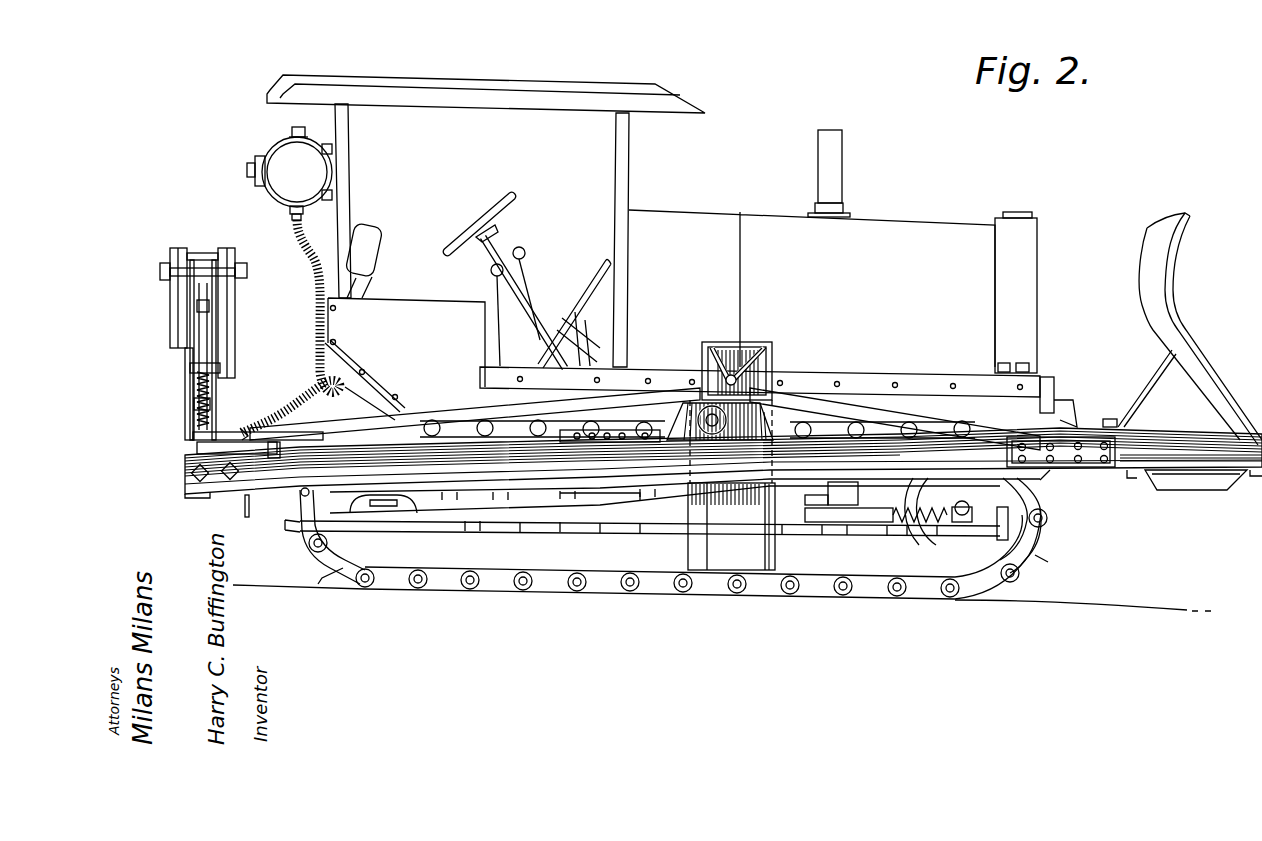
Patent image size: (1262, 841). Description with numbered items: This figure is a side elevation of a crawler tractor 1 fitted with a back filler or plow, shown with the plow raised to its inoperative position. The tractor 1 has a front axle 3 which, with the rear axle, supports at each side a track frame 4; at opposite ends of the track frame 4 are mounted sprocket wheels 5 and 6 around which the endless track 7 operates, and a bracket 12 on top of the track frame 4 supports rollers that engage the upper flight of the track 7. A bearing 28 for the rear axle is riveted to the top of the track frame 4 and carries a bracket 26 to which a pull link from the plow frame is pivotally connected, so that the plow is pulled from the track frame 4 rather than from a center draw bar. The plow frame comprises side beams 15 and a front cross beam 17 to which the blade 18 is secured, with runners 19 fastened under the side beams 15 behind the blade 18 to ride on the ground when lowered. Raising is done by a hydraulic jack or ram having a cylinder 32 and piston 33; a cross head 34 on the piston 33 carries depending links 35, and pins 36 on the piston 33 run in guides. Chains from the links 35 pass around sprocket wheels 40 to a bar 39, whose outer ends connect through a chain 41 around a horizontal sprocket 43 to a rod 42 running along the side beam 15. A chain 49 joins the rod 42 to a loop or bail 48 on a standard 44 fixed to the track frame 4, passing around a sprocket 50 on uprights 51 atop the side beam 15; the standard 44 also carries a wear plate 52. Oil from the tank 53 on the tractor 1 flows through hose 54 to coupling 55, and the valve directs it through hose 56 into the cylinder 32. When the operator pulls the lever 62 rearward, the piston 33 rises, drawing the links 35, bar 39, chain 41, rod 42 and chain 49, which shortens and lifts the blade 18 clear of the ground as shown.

The tractor 1 is at (1023, 383).
The front axle 3 is at (850, 497).
The track frame 4 is at (528, 522).
The sprocket wheel 5 is at (348, 502).
The sprocket wheel 6 is at (1000, 490).
The endless track 7 is at (452, 586).
The bracket 12 is at (633, 494).
The side beam 15 is at (798, 463).
The front cross beam 17 is at (1148, 388).
The blade 18 is at (1178, 330).
The runner 19 is at (1175, 488).
The bracket 26 is at (474, 492).
The bearing 28 is at (540, 500).
The cylinder 32 is at (220, 398).
The piston 33 is at (205, 330).
The cross head 34 is at (207, 268).
The link 35 is at (214, 318).
The pin 36 is at (160, 278).
The bar 39 is at (222, 366).
The sprocket wheel 40 is at (213, 415).
The chain 41 is at (240, 470).
The rod 42 is at (446, 420).
The horizontal sprocket 43 is at (198, 436).
The standard 44 is at (778, 382).
The loop or bail 48 is at (760, 360).
The chain 49 is at (713, 455).
The sprocket 50 is at (690, 378).
The upright 51 is at (775, 410).
The plate 52 is at (722, 542).
The oil tank 53 is at (313, 176).
The hose 54 is at (316, 300).
The coupling 55 is at (347, 378).
The hose 56 is at (270, 412).
The lever 62 is at (607, 272).